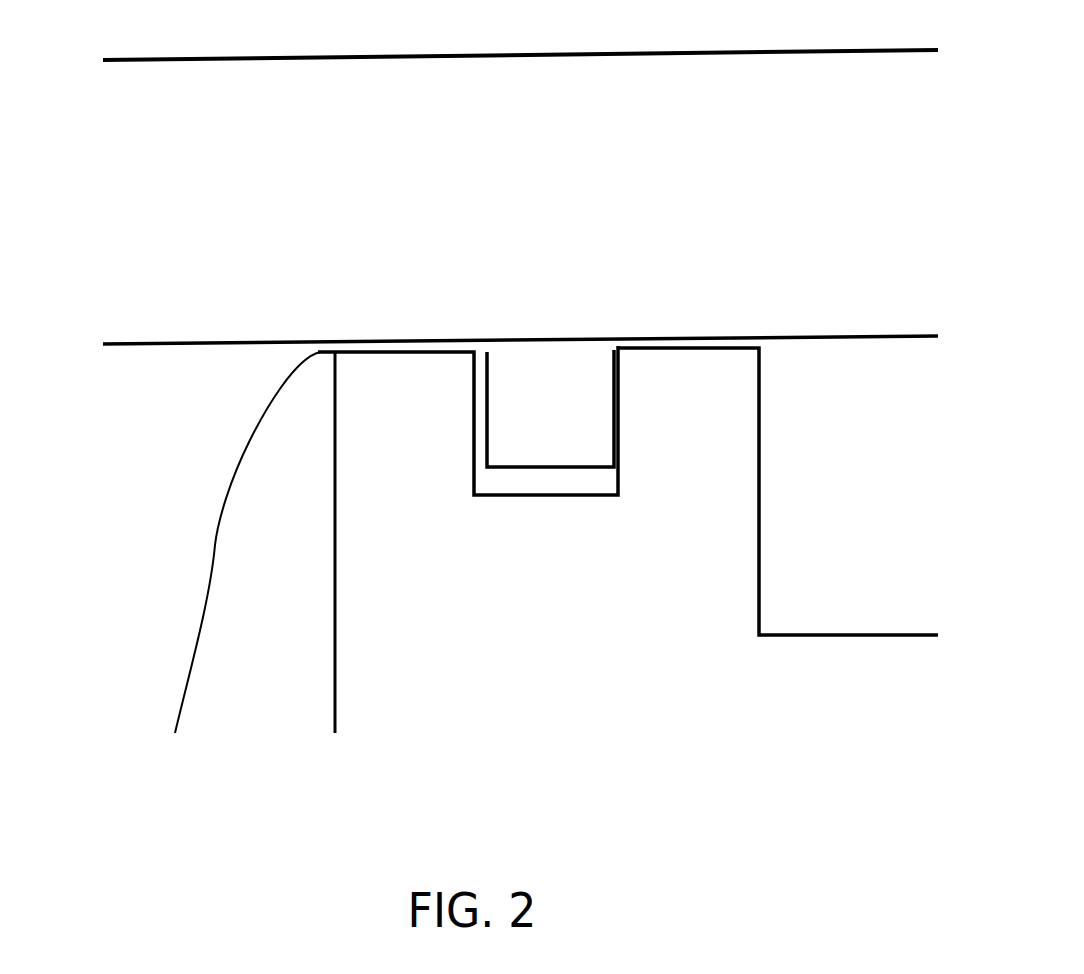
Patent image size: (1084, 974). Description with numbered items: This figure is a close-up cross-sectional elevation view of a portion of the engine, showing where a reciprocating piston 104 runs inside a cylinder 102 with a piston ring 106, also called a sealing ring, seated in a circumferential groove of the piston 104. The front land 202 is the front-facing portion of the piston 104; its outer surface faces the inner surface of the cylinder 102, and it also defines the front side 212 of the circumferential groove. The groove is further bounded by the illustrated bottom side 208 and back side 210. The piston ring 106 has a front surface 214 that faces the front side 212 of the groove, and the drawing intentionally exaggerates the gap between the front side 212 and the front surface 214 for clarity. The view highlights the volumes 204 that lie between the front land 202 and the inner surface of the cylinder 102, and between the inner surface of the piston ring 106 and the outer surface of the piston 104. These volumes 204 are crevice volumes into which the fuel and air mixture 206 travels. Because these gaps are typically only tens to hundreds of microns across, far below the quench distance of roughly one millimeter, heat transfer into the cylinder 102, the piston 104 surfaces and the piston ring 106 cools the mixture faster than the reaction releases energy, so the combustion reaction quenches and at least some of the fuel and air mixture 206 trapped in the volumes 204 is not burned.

The cylinder 102 is at (622, 128).
The piston 104 is at (630, 636).
The piston ring 106 is at (573, 360).
The front land 202 is at (388, 398).
The volumes 204 is at (518, 477).
The fuel and air mixture 206 is at (288, 352).
The bottom side 208 is at (584, 471).
The back side 210 is at (618, 403).
The front side 212 is at (472, 398).
The front surface 214 is at (480, 403).